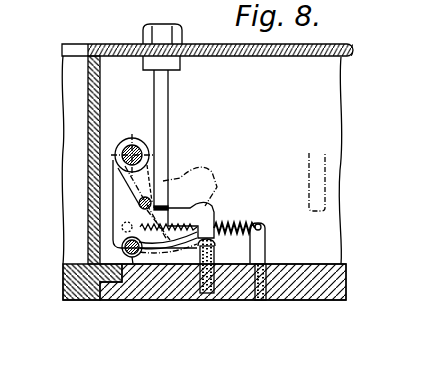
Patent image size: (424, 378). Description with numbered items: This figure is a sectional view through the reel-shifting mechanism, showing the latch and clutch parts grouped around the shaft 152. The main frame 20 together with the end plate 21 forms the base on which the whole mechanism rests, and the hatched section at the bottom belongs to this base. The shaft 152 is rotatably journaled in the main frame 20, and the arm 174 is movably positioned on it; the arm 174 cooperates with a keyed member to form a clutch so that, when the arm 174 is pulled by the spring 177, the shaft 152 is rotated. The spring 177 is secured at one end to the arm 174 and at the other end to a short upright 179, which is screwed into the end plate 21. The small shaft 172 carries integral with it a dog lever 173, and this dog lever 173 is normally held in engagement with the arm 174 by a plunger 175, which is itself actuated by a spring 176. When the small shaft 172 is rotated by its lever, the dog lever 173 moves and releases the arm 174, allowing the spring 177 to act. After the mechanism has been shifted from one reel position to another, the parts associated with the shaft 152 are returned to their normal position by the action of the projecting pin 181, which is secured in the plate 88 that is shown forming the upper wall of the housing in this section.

The main frame 20 is at (76, 301).
The end plate 21 is at (223, 302).
The plate 88 is at (347, 59).
The shaft 152 is at (137, 150).
The small shaft 172 is at (110, 302).
The dog lever 173 is at (210, 204).
The arm 174 is at (120, 197).
The plunger 175 is at (172, 266).
The spring 176 is at (209, 310).
The spring 177 is at (213, 213).
The short upright 179 is at (255, 258).
The projecting pin 181 is at (157, 97).